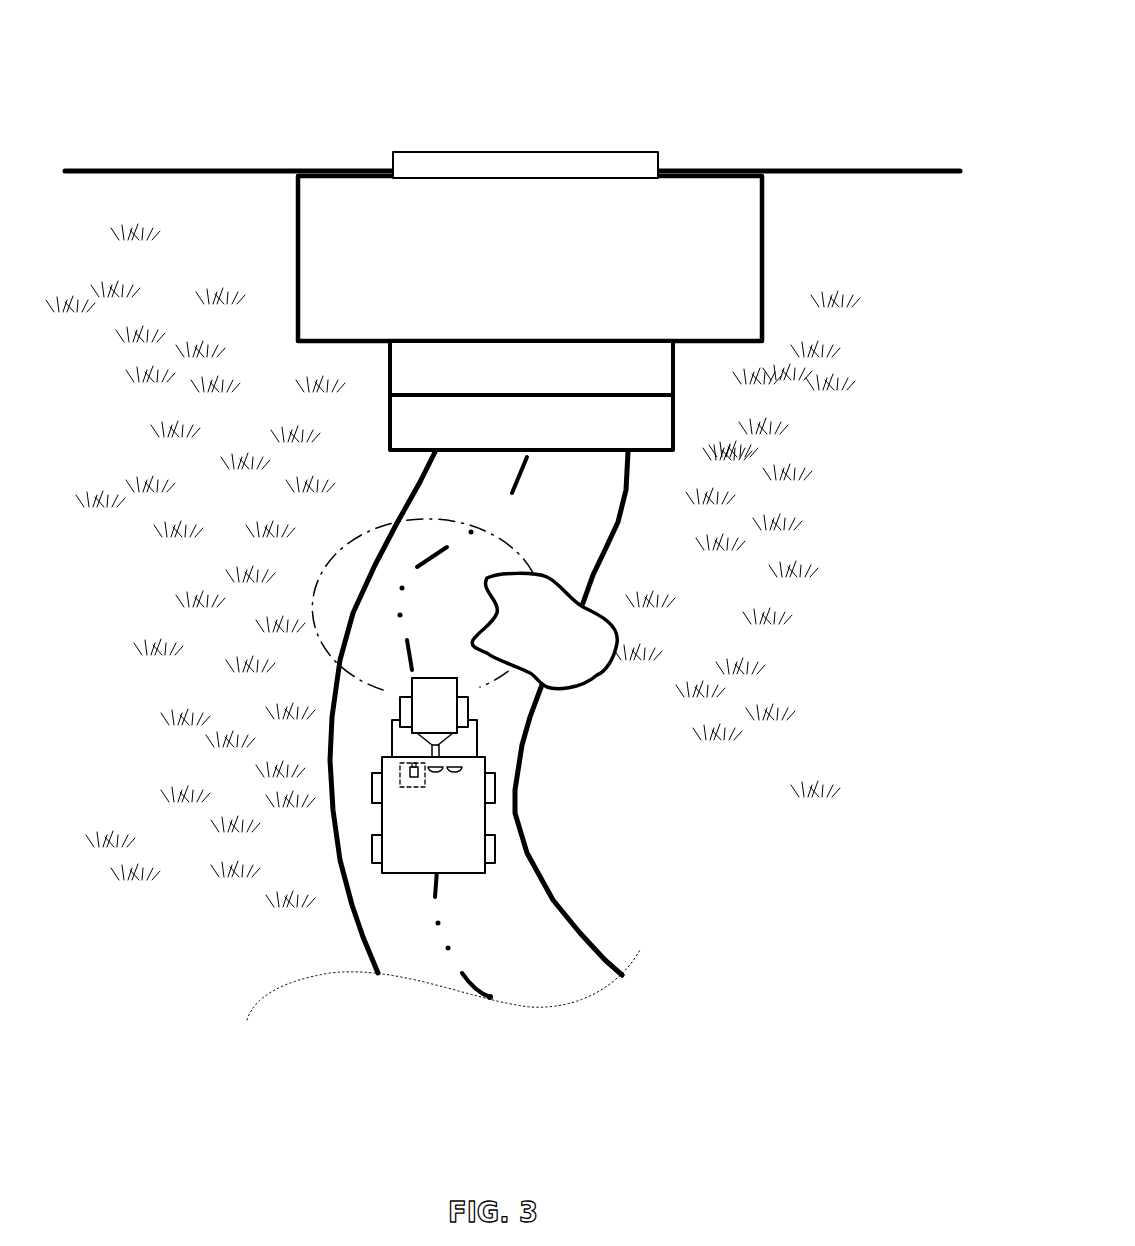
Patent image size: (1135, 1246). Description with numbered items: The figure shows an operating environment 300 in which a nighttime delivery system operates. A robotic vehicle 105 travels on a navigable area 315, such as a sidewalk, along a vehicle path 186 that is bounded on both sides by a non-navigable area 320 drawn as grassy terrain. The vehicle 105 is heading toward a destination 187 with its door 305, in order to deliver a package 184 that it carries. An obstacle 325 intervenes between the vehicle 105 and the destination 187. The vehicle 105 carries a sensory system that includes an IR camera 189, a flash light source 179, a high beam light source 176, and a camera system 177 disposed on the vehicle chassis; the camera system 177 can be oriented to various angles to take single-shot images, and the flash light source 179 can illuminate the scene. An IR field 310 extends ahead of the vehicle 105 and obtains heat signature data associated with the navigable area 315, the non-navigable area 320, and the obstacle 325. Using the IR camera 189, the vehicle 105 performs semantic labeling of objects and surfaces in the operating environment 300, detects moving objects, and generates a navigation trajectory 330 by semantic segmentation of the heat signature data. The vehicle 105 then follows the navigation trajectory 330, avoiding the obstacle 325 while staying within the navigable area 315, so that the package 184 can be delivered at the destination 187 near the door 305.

The operating environment 300 is at (897, 146).
The door 305 is at (528, 151).
The destination 187 is at (535, 337).
The IR field 310 is at (433, 520).
The package 184 is at (425, 678).
The obstacle 325 is at (544, 630).
The IR camera 189 is at (285, 1102).
The flash light source 179 is at (453, 772).
The high beam light source 176 is at (433, 772).
The vehicle path 186 is at (575, 983).
The non-navigable area 320 is at (497, 565).
The navigable area 315 is at (363, 882).
The vehicle 105 is at (430, 874).
The camera system 177 is at (425, 787).
The navigation trajectory 330 is at (490, 1000).